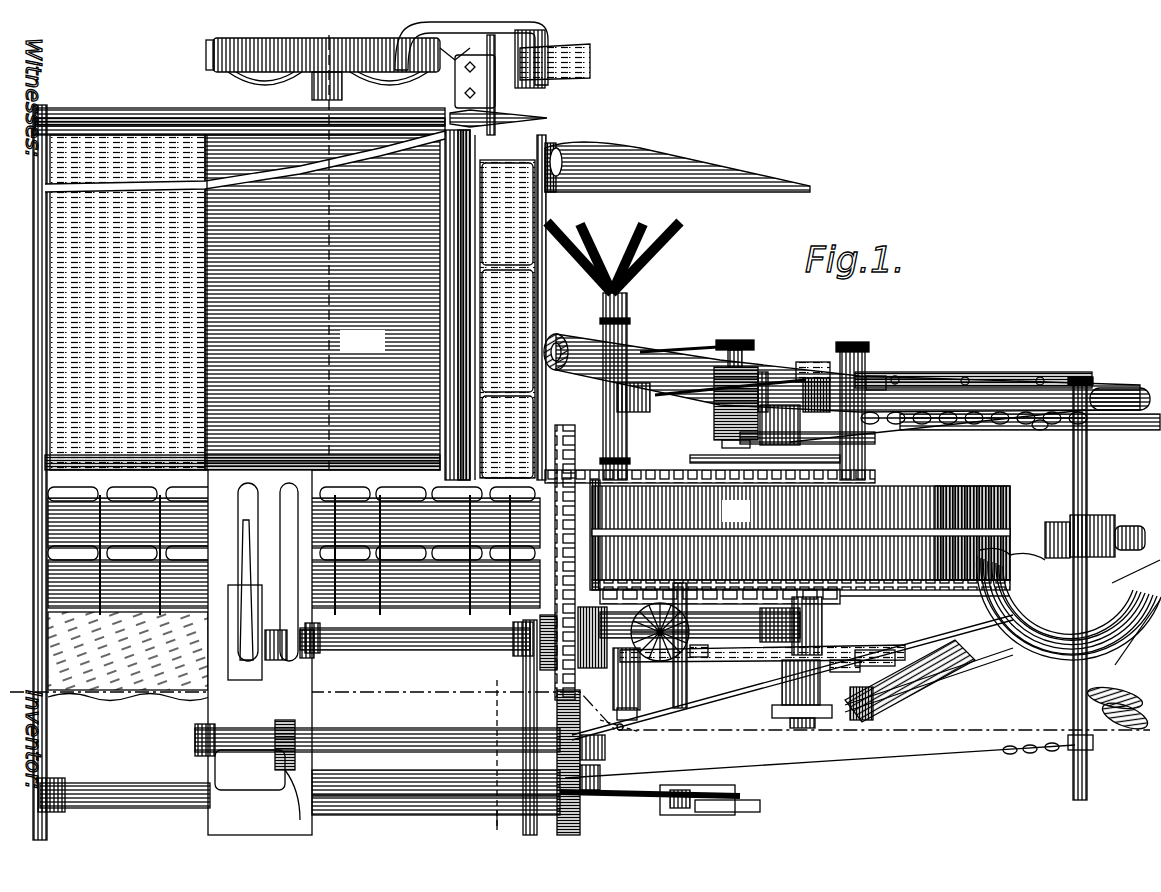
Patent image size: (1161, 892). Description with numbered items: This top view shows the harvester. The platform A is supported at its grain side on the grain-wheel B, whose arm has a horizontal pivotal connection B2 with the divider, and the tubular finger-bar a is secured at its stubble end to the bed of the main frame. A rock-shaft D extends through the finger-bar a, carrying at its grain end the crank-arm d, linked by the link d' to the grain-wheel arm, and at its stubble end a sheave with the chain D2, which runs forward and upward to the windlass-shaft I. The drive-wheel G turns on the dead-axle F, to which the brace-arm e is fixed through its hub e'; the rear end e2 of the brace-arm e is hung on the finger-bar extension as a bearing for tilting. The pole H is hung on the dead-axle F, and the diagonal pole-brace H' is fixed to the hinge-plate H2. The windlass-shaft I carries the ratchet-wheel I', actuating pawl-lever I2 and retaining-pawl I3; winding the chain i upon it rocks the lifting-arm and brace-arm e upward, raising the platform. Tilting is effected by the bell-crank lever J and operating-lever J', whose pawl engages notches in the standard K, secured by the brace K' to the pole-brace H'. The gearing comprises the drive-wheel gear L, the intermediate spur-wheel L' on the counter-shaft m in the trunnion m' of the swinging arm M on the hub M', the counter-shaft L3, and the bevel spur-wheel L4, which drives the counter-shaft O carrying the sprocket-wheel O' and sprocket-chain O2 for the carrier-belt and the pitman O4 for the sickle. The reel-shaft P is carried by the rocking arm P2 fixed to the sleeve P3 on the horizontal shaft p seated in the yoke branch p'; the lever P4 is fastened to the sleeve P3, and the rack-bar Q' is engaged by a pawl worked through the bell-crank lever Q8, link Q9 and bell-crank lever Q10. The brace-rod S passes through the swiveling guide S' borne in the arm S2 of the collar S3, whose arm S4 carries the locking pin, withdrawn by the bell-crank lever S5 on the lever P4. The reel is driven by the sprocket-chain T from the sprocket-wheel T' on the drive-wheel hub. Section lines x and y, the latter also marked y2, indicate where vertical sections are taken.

The platform A is at (245, 255).
The grain-wheel B is at (323, 58).
The section line y is at (325, 26).
The rock-shaft D is at (471, 53).
The crank-arm d is at (455, 43).
The link d' is at (462, 81).
The horizontal pivotal connection B2 is at (540, 86).
The finger-bar a is at (498, 111).
The reel-shaft P is at (591, 386).
The brace-rod S is at (848, 369).
The pole H is at (1030, 400).
The swiveling guide S' is at (721, 384).
The arm S2 is at (745, 390).
The collar S3 is at (769, 404).
The sleeve P3 is at (796, 395).
The rocking arm P2 is at (730, 399).
The dead-axle F is at (806, 362).
The horizontal shaft p is at (854, 399).
The yoke branch p' is at (884, 361).
The bell-crank lever Q8 is at (904, 365).
The rack-bar Q' is at (973, 374).
The link Q9 is at (976, 369).
The bell-crank lever Q10 is at (1065, 365).
The lever P4 is at (974, 405).
The windlass-chain i is at (932, 433).
The arm S4 is at (834, 447).
The bell-crank lever S5 is at (1044, 436).
The sprocket-chain T is at (710, 466).
The sprocket-wheel T' is at (765, 459).
The windlass-shaft I is at (1080, 588).
The ratchet-wheel I' is at (1094, 526).
The retaining-pawl I3 is at (1055, 522).
The actuating pawl-lever I2 is at (1136, 530).
The drive-wheel G is at (800, 535).
The intermediate spur-wheel L' is at (720, 592).
The drive-wheel gear L is at (925, 602).
The bevel spur-wheel L4 is at (592, 622).
The swinging arm M is at (700, 632).
The hub M' is at (817, 626).
The counter-shaft m is at (654, 651).
The trunnion m' is at (710, 658).
The bell-crank lever J is at (762, 647).
The operating-lever J' is at (929, 680).
The standard K is at (845, 666).
The brace K' is at (875, 666).
The diagonal pole-brace H' is at (910, 681).
The hinge-plate H2 is at (859, 702).
The hub e' is at (802, 694).
The brace-arm e is at (792, 677).
The rear end of brace-arm e2 is at (603, 718).
The counter-shaft L3 is at (637, 719).
The chain D2 is at (820, 760).
The section line x is at (580, 709).
The pitman O4 is at (294, 543).
The axis line y2 is at (497, 826).
The sprocket-chain O2 is at (570, 562).
The sprocket-wheel O' is at (553, 642).
The counter-shaft O is at (575, 751).